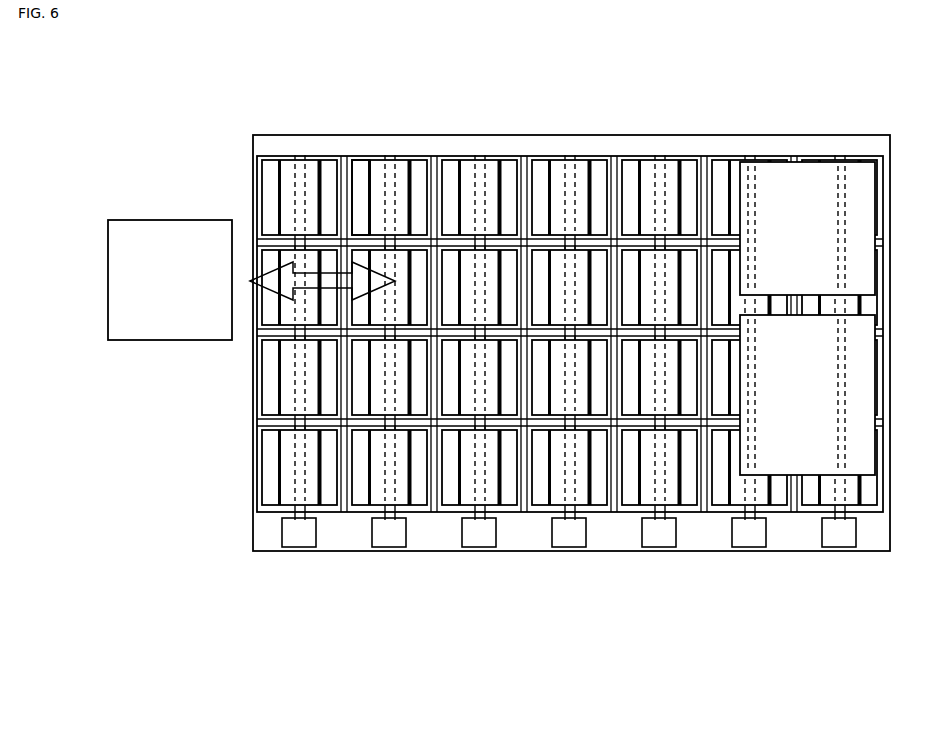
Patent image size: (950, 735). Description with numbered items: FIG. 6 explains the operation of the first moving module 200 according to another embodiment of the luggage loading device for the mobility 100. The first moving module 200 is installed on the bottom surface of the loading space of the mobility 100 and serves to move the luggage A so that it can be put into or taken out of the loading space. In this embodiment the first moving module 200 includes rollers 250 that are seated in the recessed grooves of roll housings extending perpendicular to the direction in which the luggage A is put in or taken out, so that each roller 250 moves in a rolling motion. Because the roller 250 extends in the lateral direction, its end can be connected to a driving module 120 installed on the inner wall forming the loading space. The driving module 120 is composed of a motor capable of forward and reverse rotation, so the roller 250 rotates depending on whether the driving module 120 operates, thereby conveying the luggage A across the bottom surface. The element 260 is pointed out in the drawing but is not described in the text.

The mobility 100 is at (525, 541).
The driving module 120 is at (388, 544).
The first moving module 200 is at (566, 287).
The roller 250 is at (386, 159).
The side plate 260 is at (362, 163).
The luggage A is at (157, 232).